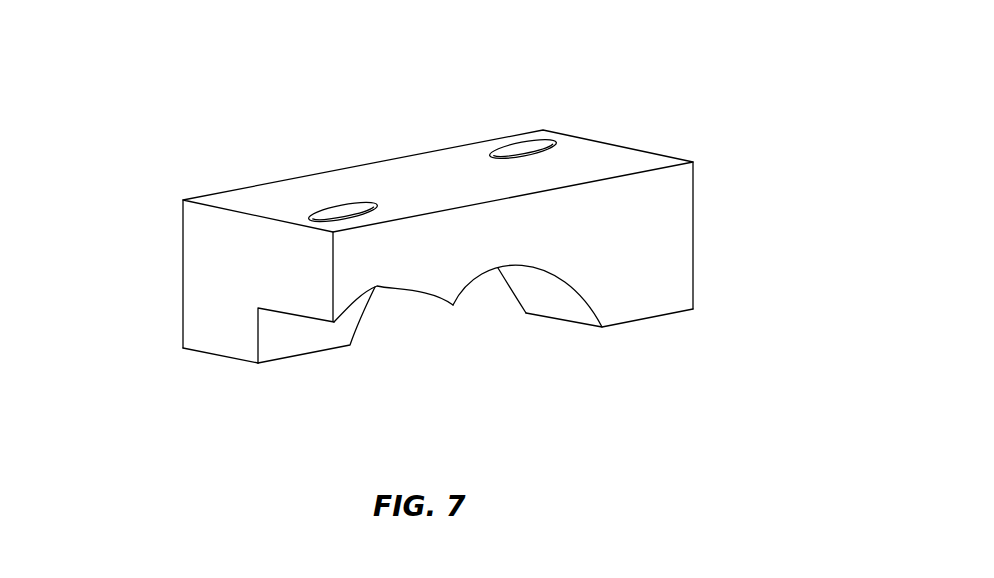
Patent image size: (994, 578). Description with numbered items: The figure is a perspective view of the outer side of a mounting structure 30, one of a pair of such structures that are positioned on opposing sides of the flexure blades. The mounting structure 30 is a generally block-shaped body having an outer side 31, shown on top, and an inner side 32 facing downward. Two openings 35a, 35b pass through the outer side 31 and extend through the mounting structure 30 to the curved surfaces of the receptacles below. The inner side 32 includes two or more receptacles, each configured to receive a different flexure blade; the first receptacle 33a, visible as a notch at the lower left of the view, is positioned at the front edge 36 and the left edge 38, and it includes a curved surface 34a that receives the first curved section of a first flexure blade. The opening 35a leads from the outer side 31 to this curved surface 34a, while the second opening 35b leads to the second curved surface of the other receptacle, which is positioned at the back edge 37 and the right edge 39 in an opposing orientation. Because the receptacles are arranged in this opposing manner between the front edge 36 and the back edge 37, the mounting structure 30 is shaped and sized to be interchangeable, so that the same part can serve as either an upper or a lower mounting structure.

The mounting structure 30 is at (439, 233).
The outer side 31 is at (460, 163).
The inner side 32 is at (640, 320).
The first receptacle 33a is at (302, 370).
The curved surface 34a is at (361, 294).
The opening 35a is at (330, 212).
The opening 35b is at (540, 152).
The front edge 36 is at (660, 258).
The back edge 37 is at (182, 242).
The left edge 38 is at (215, 337).
The right edge 39 is at (693, 213).